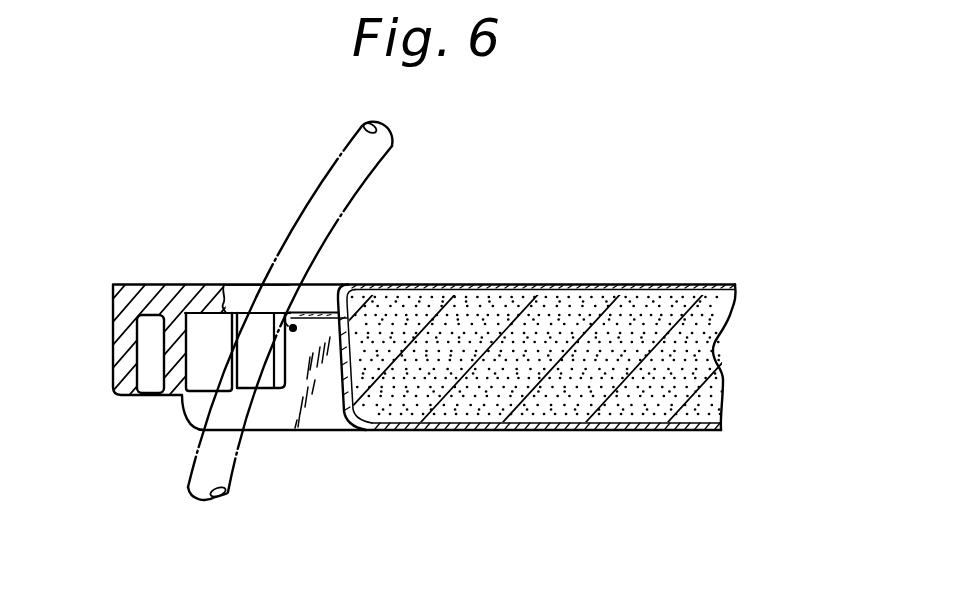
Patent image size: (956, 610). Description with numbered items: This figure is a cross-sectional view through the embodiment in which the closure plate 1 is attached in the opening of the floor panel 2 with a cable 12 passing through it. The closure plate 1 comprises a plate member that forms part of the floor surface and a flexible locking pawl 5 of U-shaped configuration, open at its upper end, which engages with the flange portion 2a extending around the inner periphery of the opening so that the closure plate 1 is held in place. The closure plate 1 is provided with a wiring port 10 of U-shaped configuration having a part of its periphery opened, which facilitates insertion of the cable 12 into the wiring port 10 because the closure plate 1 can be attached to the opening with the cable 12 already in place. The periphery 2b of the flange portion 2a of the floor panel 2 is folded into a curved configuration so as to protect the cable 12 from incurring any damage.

The closure plate 1 is at (182, 285).
The floor panel 2 is at (495, 313).
The flange portion 2a is at (330, 284).
The periphery of the flange 2b is at (297, 333).
The locking pawl 5 is at (196, 398).
The wiring port 10 is at (241, 300).
The cable 12 is at (362, 160).